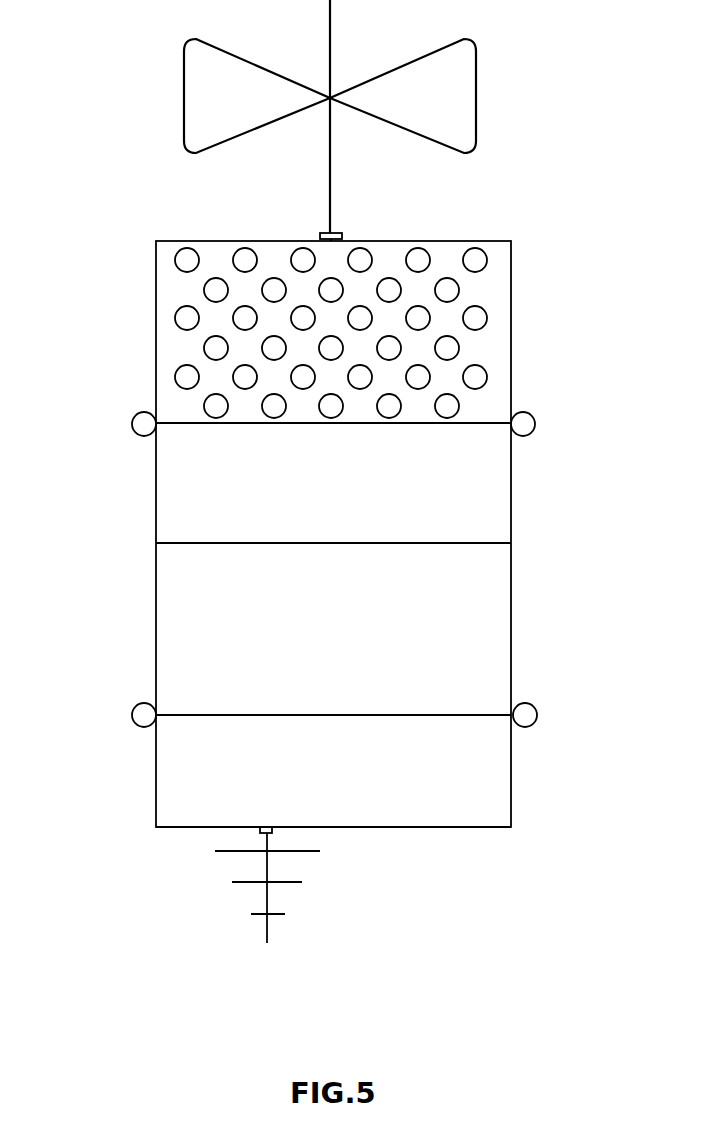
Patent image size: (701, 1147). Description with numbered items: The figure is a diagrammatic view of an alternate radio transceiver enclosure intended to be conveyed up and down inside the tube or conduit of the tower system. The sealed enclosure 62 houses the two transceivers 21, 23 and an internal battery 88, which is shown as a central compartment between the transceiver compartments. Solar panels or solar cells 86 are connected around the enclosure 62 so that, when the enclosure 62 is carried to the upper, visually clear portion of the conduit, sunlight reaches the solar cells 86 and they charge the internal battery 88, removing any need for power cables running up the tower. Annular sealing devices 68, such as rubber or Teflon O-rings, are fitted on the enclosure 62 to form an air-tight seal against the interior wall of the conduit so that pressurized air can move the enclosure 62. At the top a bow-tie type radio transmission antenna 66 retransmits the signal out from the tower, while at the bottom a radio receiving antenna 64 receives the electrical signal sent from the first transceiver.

The radio transmission antenna 66 is at (477, 95).
The solar cells 86 is at (177, 292).
The enclosure 62 is at (531, 412).
The transceiver 23 is at (346, 504).
The internal battery 88 is at (242, 625).
The annular sealing devices 68 is at (533, 702).
The transceiver 21 is at (348, 780).
The radio receiving antenna 64 is at (275, 918).